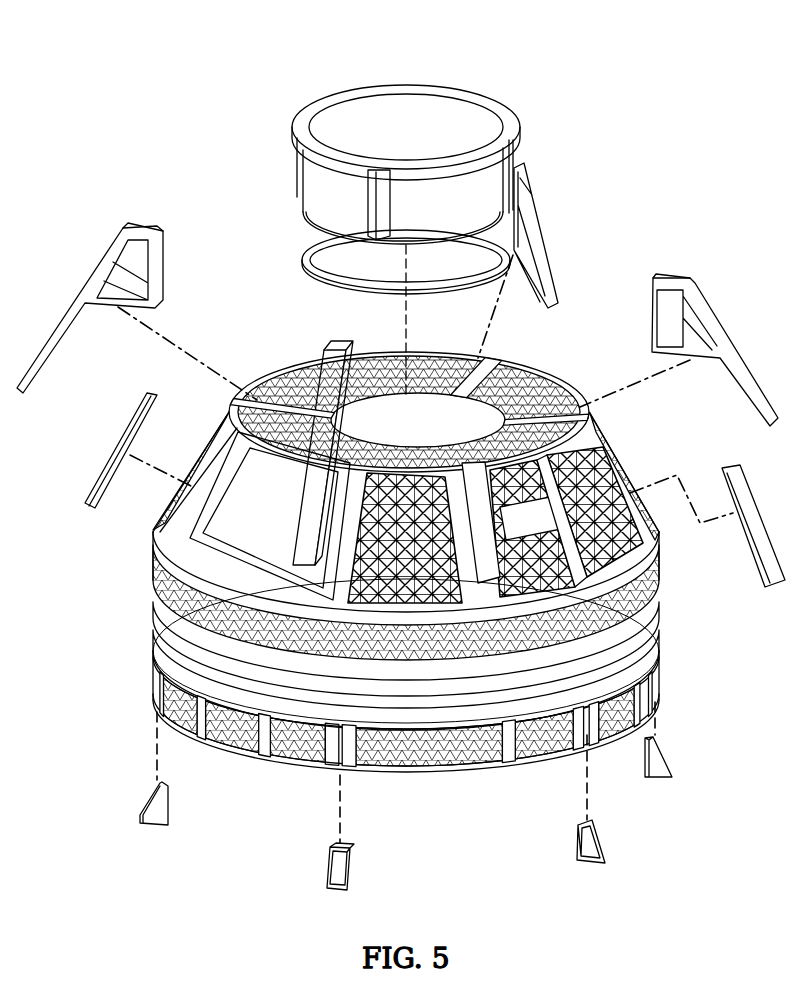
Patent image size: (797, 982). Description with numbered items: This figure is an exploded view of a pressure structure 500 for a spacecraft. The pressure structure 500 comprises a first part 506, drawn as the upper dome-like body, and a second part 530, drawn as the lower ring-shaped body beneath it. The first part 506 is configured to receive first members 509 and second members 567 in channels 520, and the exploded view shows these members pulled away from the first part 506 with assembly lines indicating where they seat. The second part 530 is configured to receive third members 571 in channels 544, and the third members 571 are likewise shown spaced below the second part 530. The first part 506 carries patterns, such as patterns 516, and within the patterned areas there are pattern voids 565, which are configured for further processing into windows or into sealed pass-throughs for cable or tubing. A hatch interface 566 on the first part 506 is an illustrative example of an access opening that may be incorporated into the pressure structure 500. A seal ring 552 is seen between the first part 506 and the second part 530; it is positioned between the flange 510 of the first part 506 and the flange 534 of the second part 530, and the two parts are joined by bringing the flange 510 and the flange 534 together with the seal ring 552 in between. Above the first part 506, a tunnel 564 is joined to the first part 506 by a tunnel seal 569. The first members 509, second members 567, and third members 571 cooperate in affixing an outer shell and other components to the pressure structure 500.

The pressure structure 500 is at (604, 67).
The first part 506 is at (283, 328).
The first members 509 is at (130, 428).
The flange 510 is at (156, 588).
The patterns 516 is at (418, 498).
The channels 520 is at (655, 530).
The second part 530 is at (233, 766).
The flange 534 is at (150, 638).
The channels 544 is at (362, 485).
The seal ring 552 is at (664, 605).
The tunnel 564 is at (372, 88).
The pattern voids 565 is at (548, 531).
The hatch interface 566 is at (272, 558).
The second members 567 is at (148, 226).
The tunnel seal 569 is at (303, 246).
The third members 571 is at (152, 828).